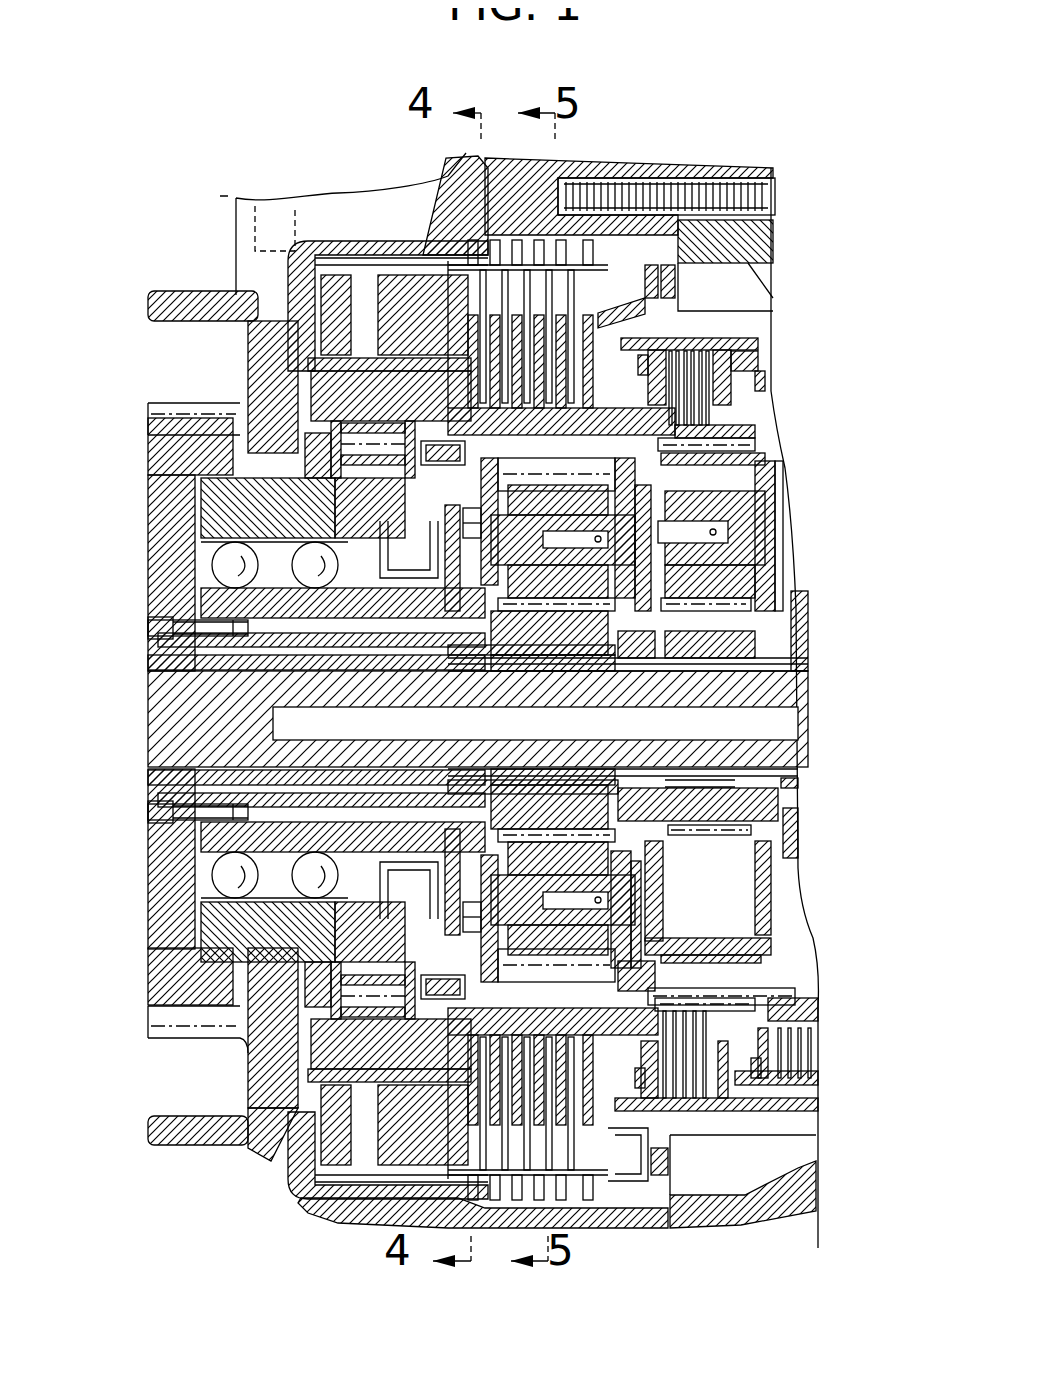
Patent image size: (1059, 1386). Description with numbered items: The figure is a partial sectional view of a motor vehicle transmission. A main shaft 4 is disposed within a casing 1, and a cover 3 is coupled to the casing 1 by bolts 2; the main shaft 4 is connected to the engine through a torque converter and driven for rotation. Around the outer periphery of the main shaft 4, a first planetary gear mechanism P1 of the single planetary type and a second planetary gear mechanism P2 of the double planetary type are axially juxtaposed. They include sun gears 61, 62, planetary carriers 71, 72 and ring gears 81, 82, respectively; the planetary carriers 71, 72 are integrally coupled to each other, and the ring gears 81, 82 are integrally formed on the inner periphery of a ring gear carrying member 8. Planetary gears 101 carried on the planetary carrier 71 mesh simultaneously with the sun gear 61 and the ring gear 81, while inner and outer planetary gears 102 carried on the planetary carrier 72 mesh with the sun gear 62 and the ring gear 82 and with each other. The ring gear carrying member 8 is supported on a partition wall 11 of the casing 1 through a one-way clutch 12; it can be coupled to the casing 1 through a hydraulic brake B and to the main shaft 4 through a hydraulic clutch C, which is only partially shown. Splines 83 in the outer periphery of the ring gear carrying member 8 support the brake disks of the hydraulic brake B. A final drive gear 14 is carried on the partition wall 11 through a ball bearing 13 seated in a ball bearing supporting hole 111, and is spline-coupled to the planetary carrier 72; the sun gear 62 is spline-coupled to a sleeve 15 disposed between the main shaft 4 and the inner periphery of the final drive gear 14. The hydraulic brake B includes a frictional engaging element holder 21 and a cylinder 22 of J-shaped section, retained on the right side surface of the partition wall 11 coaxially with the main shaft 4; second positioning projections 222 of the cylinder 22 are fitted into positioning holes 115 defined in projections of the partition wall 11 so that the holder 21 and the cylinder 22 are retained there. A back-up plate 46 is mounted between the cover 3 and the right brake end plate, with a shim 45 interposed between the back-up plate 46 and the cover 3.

The casing 1 is at (622, 157).
The bolts 2 is at (717, 190).
The cover 3 is at (748, 233).
The main shaft 4 is at (208, 728).
The shim 45 is at (670, 273).
The back-up plate 46 is at (645, 312).
The hydraulic brake B is at (524, 194).
The hydraulic clutch C is at (745, 325).
The ring gear carrying member 8 is at (603, 397).
The ring gear 81 is at (693, 1000).
The ring gear 82 is at (397, 435).
The splines 83 is at (567, 1037).
The planetary gears 101 is at (752, 434).
The inner and outer planetary gears 102 is at (517, 857).
The first planetary gear mechanism P1 is at (777, 530).
The second planetary gear mechanism P2 is at (460, 862).
The partition wall 11 is at (240, 382).
The ball bearing supporting hole 111 is at (235, 503).
The positioning holes 115 is at (272, 1097).
The one-way clutch 12 is at (330, 437).
The ball bearing 13 is at (190, 555).
The final drive gear 14 is at (153, 393).
The sleeve 15 is at (150, 643).
The frictional engaging element holder 21 is at (378, 245).
The cylinder 22 is at (343, 376).
The second positioning projections 222 is at (265, 1142).
The sun gear 61 is at (707, 828).
The sun gear 62 is at (538, 830).
The planetary carrier 71 is at (752, 925).
The planetary carrier 72 is at (455, 512).